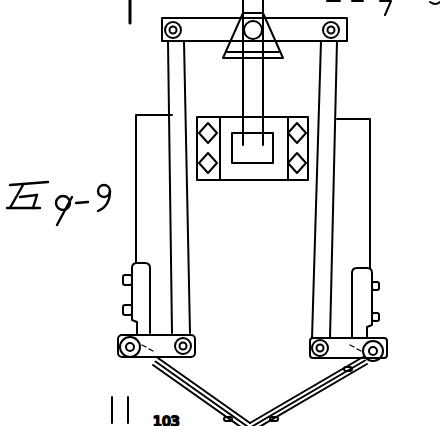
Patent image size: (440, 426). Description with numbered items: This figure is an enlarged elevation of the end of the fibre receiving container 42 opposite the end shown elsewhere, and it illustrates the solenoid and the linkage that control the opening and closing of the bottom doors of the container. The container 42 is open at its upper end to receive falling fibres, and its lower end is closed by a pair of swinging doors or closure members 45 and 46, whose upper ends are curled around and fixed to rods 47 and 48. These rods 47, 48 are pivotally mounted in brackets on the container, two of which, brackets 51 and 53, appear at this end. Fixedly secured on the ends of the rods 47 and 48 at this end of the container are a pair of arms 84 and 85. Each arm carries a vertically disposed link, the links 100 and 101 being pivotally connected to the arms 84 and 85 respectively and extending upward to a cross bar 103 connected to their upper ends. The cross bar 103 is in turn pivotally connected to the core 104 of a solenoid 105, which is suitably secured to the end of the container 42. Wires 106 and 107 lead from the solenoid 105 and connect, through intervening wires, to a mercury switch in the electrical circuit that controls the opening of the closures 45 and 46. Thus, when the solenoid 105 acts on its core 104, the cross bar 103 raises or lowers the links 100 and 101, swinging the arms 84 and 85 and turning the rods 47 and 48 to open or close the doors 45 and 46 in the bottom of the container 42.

The fibre receiving container 42 is at (375, 190).
The swinging door 45 is at (190, 386).
The swinging door 46 is at (303, 394).
The rod 47 is at (120, 349).
The rod 48 is at (384, 352).
The bracket 51 is at (133, 290).
The bracket 53 is at (379, 306).
The arm 84 is at (147, 358).
The arm 85 is at (340, 340).
The link 100 is at (188, 301).
The link 101 is at (313, 293).
The cross bar 103 is at (221, 17).
The core 104 is at (270, 48).
The solenoid 105 is at (275, 177).
The wire 106 is at (243, 99).
The wire 107 is at (263, 94).